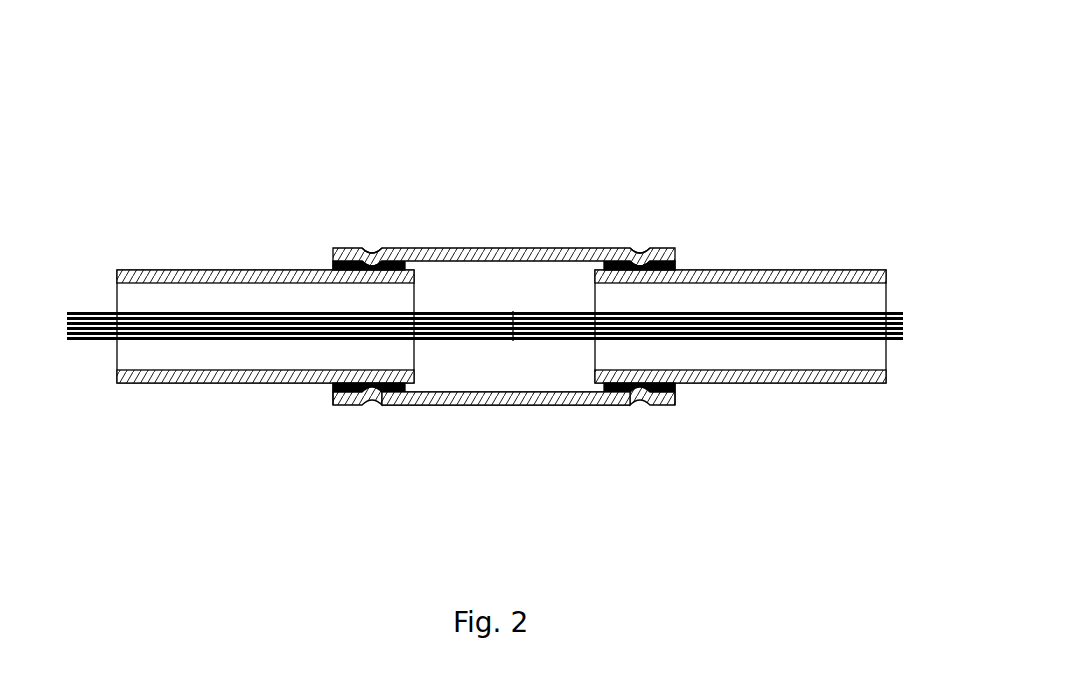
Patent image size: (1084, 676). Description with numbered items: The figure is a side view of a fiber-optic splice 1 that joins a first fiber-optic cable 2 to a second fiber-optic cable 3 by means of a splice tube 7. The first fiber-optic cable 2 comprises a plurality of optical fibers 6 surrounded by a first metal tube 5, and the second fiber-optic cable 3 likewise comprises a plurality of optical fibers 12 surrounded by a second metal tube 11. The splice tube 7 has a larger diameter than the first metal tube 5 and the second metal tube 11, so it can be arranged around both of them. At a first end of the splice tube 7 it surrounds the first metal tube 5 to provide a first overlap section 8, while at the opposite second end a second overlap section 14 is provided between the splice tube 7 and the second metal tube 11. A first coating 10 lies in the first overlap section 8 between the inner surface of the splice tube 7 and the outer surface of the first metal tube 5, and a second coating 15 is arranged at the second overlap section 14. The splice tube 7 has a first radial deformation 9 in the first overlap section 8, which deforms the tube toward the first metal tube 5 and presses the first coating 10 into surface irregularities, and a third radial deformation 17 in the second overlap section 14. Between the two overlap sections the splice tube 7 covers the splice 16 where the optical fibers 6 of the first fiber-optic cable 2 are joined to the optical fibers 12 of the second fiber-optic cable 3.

The fiber-optic splice 1 is at (123, 89).
The first fiber-optic cable 2 is at (263, 281).
The second fiber-optic cable 3 is at (743, 274).
The first metal tube 5 is at (165, 271).
The optical fibers 6 is at (75, 312).
The splice tube 7 is at (492, 259).
The first overlap section 8 is at (343, 423).
The first radial deformation 9 is at (375, 238).
The first coating 10 is at (335, 265).
The second metal tube 11 is at (842, 277).
The optical fibers 12 is at (903, 312).
The second overlap section 14 is at (654, 432).
The second coating 15 is at (675, 260).
The splice 16 is at (513, 360).
The third radial deformation 17 is at (640, 238).